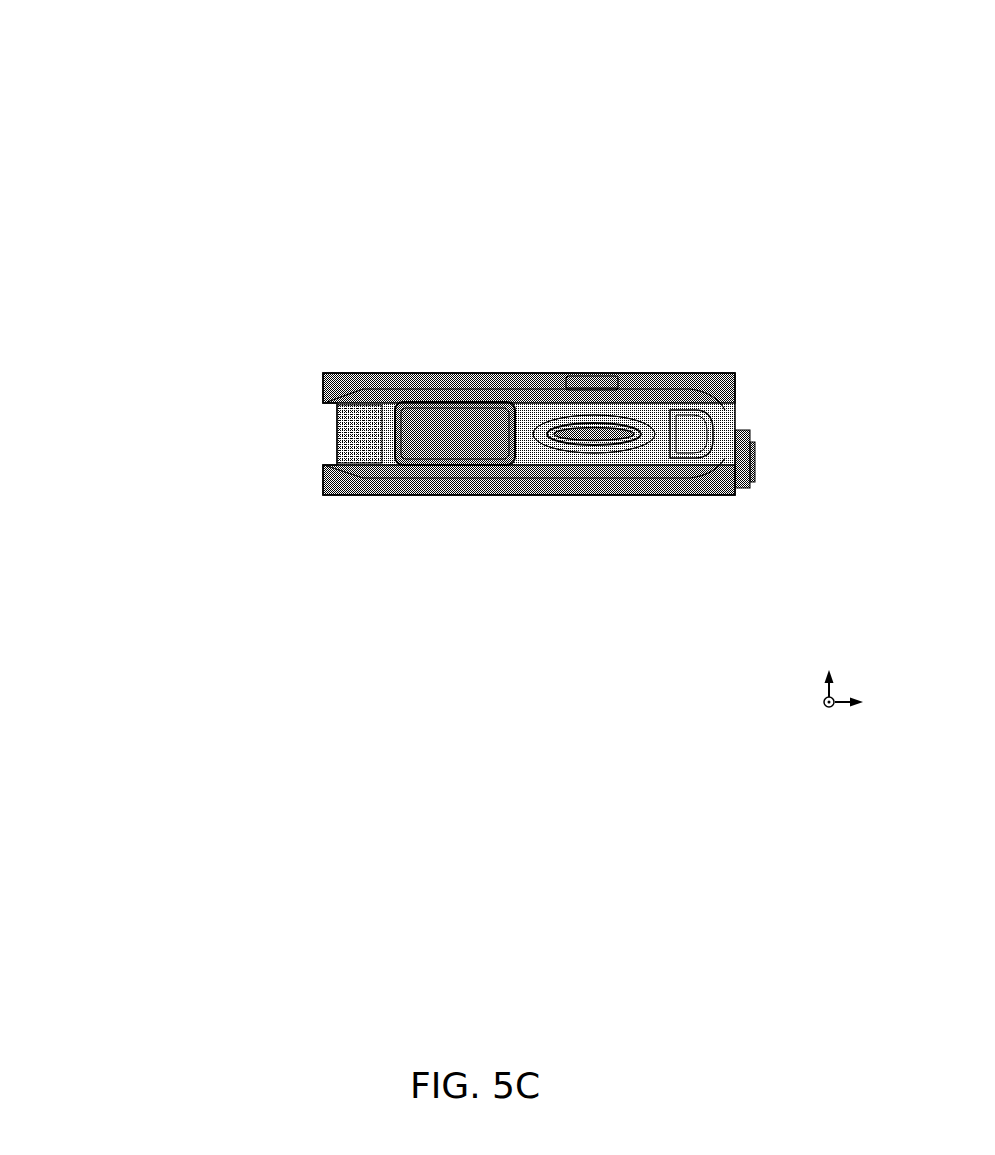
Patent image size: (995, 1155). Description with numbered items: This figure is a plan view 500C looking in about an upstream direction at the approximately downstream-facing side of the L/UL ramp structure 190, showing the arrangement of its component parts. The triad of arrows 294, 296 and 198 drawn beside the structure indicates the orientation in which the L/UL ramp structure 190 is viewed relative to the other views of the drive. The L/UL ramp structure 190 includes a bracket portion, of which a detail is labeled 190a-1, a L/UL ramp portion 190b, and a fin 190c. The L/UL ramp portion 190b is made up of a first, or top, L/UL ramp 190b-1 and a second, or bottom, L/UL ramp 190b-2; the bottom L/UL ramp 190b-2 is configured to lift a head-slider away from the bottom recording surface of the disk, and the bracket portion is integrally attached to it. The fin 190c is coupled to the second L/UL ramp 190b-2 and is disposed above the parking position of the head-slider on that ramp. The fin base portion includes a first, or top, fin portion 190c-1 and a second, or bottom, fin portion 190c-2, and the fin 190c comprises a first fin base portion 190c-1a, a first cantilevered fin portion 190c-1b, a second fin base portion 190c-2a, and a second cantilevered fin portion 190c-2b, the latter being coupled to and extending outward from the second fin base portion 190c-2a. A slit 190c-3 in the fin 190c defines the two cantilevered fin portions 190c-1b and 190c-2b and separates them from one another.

The plan view 500C is at (100, 75).
The L/UL ramp structure 190 is at (199, 250).
The housing 190a-1 is at (717, 392).
The L/UL ramp portion 190b is at (190, 383).
The first L/UL ramp 190b-1 is at (346, 374).
The second L/UL ramp 190b-2 is at (346, 496).
The fin 190c is at (188, 563).
The first fin portion 190c-1 is at (300, 563).
The first fin base portion 190c-1a is at (529, 400).
The first cantilevered fin portion 190c-1b is at (597, 404).
The second fin portion 190c-2 is at (300, 695).
The second fin base portion 190c-2a is at (524, 466).
The second cantilevered fin portion 190c-2b is at (603, 463).
The slit 190c-3 is at (580, 434).
The arrow 198 is at (823, 689).
The arrow 294 is at (822, 704).
The arrow 296 is at (842, 707).